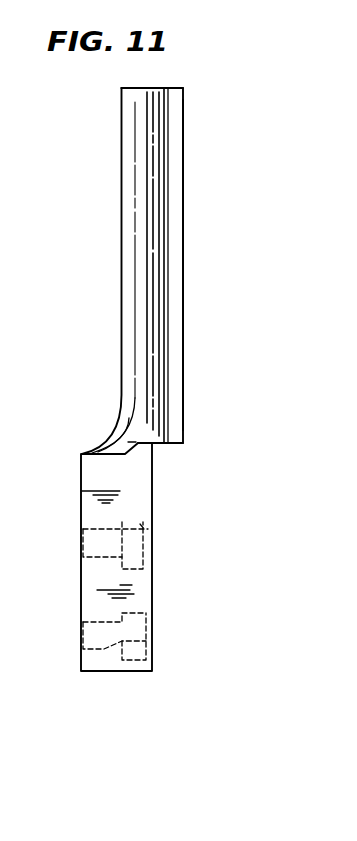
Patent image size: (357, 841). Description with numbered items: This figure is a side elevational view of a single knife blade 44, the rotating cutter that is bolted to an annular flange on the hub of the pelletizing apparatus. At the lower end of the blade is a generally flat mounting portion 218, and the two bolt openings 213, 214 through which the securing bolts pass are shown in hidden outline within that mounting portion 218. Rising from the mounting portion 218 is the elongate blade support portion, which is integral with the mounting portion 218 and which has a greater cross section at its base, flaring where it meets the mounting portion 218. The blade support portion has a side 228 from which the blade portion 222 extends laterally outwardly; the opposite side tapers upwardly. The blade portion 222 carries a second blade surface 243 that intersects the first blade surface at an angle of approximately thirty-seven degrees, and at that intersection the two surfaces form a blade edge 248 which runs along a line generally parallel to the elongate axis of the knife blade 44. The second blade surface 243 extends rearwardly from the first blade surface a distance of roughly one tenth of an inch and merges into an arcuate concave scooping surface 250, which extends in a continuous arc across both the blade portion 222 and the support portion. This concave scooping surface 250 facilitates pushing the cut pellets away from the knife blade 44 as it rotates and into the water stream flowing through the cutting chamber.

The knife blade 44 is at (226, 358).
The blade edge 248 is at (184, 152).
The second blade surface 243 is at (178, 309).
The arcuate concave scooping surface 250 is at (153, 215).
The blade portion 222 is at (140, 87).
The side of blade support portion 228 is at (129, 341).
The mounting portion 218 is at (88, 577).
The opening 214 is at (152, 532).
The opening 213 is at (152, 651).